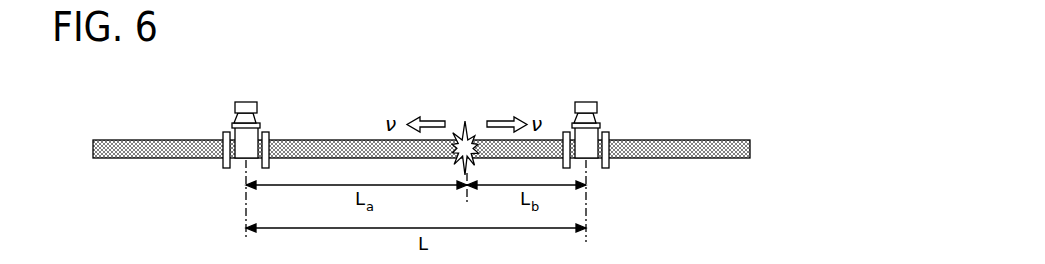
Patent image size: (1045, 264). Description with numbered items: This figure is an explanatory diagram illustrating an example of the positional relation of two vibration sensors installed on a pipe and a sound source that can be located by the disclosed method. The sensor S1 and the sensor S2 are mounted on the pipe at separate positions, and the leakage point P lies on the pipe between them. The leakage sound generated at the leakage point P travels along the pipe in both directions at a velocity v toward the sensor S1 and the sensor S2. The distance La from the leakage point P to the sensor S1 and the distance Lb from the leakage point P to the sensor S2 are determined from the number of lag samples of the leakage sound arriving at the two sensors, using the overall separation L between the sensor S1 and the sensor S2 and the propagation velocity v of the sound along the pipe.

The sensor S1 is at (242, 102).
The sensor S2 is at (582, 102).
The leakage point P is at (504, 84).